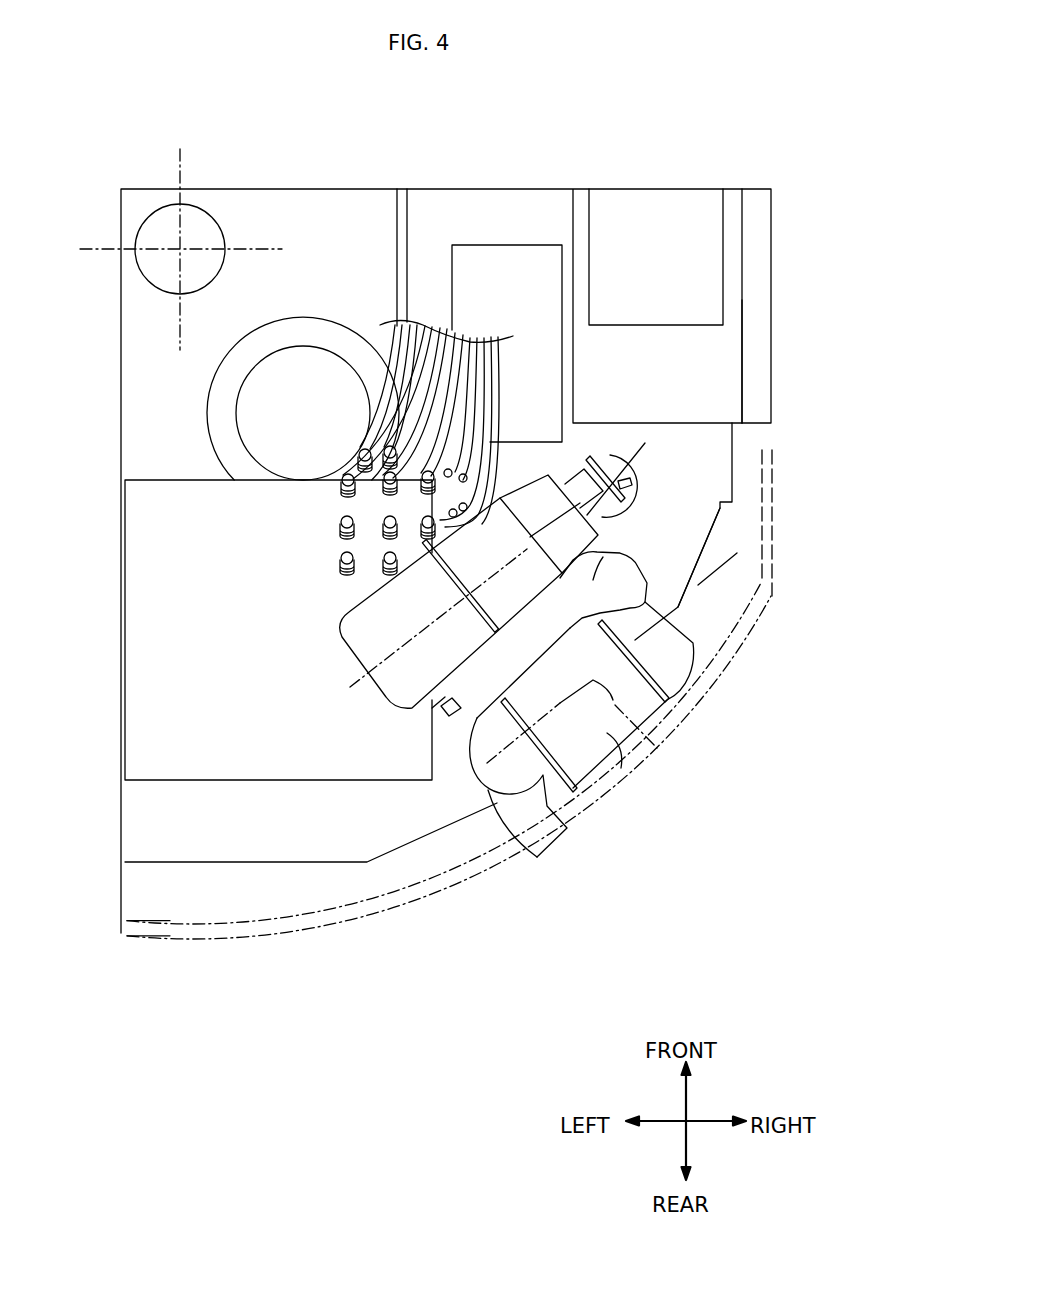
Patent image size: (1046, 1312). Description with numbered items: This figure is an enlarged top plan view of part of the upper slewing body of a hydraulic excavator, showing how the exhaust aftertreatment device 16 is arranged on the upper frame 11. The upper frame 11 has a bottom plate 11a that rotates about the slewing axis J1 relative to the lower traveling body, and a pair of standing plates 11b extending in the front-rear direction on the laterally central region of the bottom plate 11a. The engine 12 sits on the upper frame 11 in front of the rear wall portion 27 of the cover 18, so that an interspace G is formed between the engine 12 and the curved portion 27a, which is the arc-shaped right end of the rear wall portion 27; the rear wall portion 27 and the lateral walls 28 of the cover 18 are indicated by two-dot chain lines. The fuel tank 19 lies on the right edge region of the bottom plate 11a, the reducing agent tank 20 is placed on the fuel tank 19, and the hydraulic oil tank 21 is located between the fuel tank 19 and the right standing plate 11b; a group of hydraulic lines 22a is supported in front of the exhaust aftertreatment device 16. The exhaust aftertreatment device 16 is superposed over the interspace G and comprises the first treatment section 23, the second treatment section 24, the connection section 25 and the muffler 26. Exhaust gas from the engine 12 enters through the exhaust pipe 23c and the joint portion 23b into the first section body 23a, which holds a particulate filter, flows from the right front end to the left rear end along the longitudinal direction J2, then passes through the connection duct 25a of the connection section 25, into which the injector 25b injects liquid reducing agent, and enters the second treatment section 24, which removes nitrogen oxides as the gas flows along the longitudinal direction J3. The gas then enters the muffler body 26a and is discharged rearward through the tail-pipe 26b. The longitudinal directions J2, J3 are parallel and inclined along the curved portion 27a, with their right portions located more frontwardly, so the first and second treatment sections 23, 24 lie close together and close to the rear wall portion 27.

The upper frame 11 is at (446, 526).
The bottom plate 11a is at (287, 222).
The standing plates 11b is at (401, 203).
The slewing axis J1 is at (178, 244).
The engine 12 is at (135, 627).
The exhaust aftertreatment device 16 is at (292, 716).
The hydraulic oil tank 21 is at (512, 272).
The reducing agent tank 20 is at (659, 224).
The fuel tank 19 is at (745, 345).
The hydraulic lines 22a is at (310, 545).
The connection section 25 is at (390, 735).
The connection duct 25a is at (597, 555).
The injector 25b is at (457, 702).
The longitudinal direction J2 is at (340, 664).
The first treatment section 23 is at (634, 433).
The first section body 23a is at (530, 503).
The joint portion 23b is at (573, 485).
The exhaust pipe 23c is at (642, 483).
The muffler 26 is at (448, 780).
The muffler body 26a is at (553, 663).
The tail-pipe 26b is at (567, 830).
The longitudinal direction J3 is at (657, 748).
The second treatment section 24 is at (621, 768).
The cover 18 is at (506, 744).
The rear wall portion 27 is at (263, 935).
The curved portion 27a is at (708, 683).
The lateral walls 28 is at (774, 545).
The interspace G is at (718, 607).